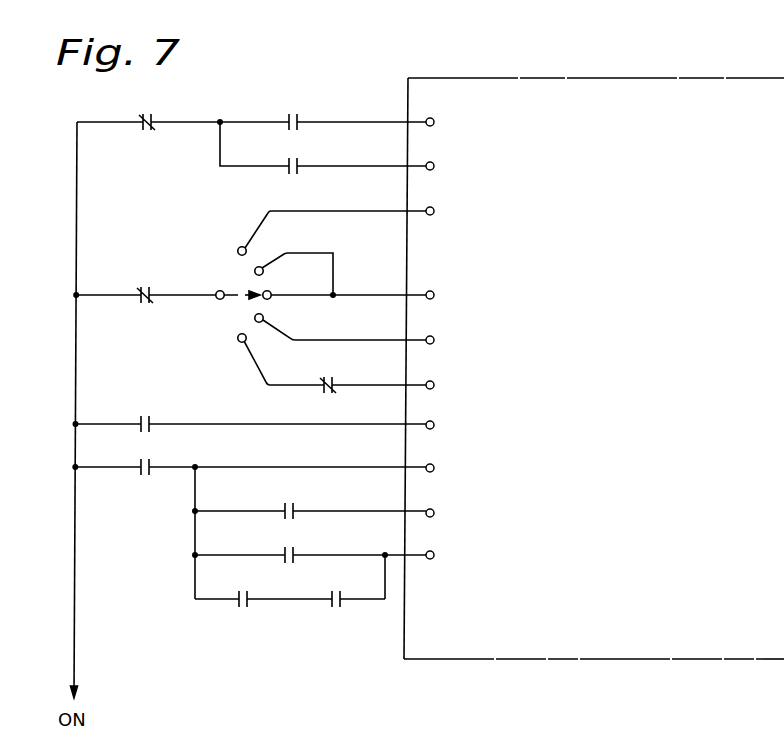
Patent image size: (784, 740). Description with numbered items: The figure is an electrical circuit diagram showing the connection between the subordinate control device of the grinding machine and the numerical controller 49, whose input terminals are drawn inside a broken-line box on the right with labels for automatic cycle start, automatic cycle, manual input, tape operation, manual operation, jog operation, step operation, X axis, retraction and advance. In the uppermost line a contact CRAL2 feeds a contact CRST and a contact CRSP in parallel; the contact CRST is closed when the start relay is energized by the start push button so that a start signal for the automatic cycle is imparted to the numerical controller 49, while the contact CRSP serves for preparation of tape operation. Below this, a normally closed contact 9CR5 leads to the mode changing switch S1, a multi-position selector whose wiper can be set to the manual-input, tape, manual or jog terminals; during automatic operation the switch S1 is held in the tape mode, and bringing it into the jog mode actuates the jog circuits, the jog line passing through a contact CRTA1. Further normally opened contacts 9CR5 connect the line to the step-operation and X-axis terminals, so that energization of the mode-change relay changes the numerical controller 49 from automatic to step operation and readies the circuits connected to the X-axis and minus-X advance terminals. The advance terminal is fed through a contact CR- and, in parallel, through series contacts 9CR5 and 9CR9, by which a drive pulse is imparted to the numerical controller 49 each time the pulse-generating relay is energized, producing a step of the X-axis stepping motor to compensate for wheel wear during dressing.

The numerical controller 49 is at (569, 77).
The contact CRAL2 is at (157, 110).
The contact CRST is at (290, 110).
The contact CRSP is at (290, 155).
The contact 9CR5 is at (194, 434).
The mode changing switch S1 is at (234, 296).
The contact CRTA1 is at (326, 371).
The contact CR- is at (288, 544).
The contact 9CR9 is at (335, 587).